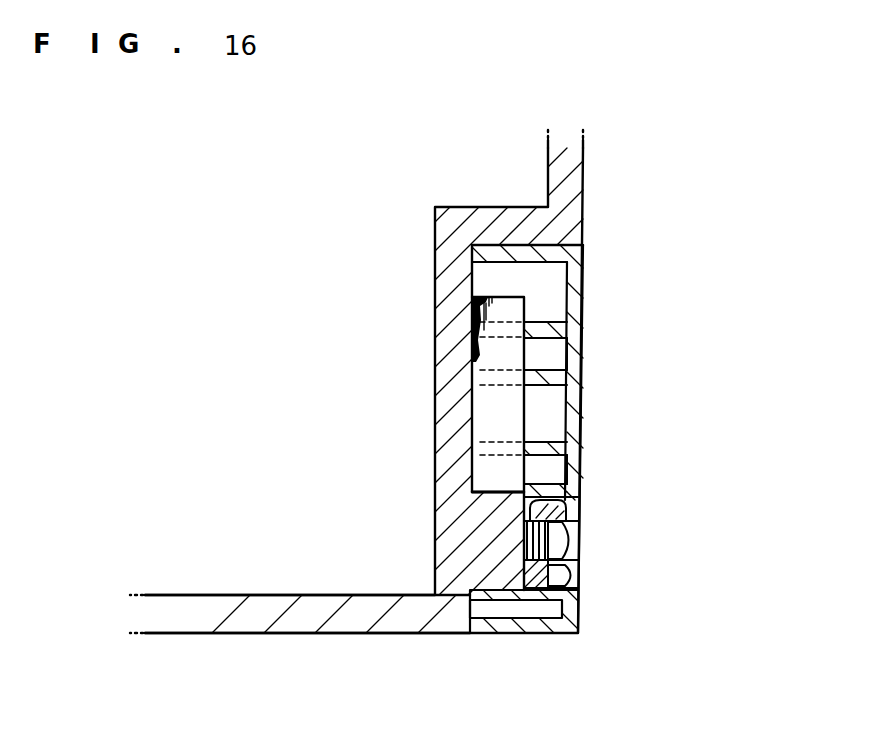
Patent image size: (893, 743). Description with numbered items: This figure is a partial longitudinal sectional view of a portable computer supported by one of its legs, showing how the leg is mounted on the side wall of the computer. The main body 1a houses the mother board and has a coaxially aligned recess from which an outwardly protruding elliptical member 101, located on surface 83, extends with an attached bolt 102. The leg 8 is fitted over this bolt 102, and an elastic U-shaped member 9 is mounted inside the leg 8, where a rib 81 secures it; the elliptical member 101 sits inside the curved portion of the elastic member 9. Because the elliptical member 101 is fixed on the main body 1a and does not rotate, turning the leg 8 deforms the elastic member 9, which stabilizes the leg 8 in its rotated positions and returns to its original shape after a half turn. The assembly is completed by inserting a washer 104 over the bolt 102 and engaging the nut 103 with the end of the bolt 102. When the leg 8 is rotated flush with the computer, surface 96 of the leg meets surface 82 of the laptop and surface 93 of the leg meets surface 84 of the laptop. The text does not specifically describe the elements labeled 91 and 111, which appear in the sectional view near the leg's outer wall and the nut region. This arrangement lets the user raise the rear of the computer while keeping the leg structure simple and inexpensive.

The main body 1a is at (573, 200).
The surface of the laptop 84 is at (578, 168).
The surface of the laptop 82 is at (257, 633).
The leg 8 is at (571, 439).
The sleeve flange 91 is at (580, 258).
The surface of the leg 93 is at (580, 378).
The bolt 102 is at (580, 473).
The elastic U-shaped member 9 is at (472, 282).
The rib 81 is at (568, 262).
The surface 83 is at (470, 473).
The washer 104 is at (578, 509).
The nut 103 is at (578, 546).
The washer 111 is at (578, 569).
The surface of the leg 96 is at (538, 620).
The elliptical member 101 is at (495, 565).